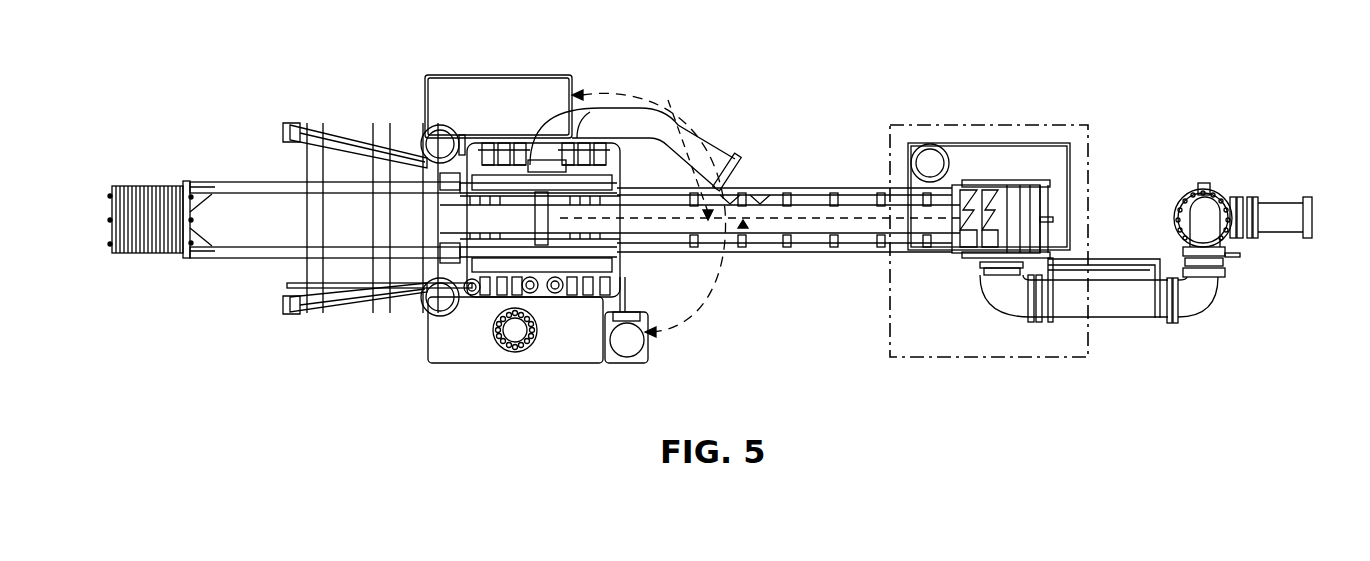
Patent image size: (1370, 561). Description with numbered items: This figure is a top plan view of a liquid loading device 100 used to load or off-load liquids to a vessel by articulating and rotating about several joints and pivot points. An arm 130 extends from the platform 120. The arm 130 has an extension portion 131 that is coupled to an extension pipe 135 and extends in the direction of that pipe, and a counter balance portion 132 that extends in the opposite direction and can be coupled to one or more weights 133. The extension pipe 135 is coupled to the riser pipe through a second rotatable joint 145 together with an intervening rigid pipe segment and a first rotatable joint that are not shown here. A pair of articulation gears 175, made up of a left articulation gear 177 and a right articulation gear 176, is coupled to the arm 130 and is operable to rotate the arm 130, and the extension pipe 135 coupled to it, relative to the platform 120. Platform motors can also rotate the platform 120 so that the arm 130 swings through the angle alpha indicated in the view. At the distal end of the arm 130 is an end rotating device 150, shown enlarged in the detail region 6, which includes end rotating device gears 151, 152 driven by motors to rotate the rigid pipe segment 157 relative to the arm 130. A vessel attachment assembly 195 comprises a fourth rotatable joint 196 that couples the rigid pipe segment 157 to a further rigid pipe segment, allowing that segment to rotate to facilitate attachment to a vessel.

The liquid loading device 100 is at (384, 60).
The platform 120 is at (543, 90).
The left articulation gear 177 is at (503, 183).
The second rotatable joint 145 is at (537, 170).
The weights 133 is at (155, 195).
The counter balance portion 132 is at (275, 182).
The extension pipe 135 is at (697, 142).
The extension portion 131 is at (760, 192).
The arm 130 is at (833, 183).
The pair of articulation gears 175 is at (597, 253).
The right articulation gear 176 is at (478, 268).
The detail region of FIG. 6 is at (990, 125).
The end rotating device 150 is at (1025, 170).
The end rotating device gear 152 is at (975, 183).
The end rotating device gear 151 is at (983, 272).
The rigid pipe segment 157 is at (1020, 307).
The vessel attachment assembly 195 is at (1247, 252).
The fourth rotatable joint 196 is at (1215, 193).